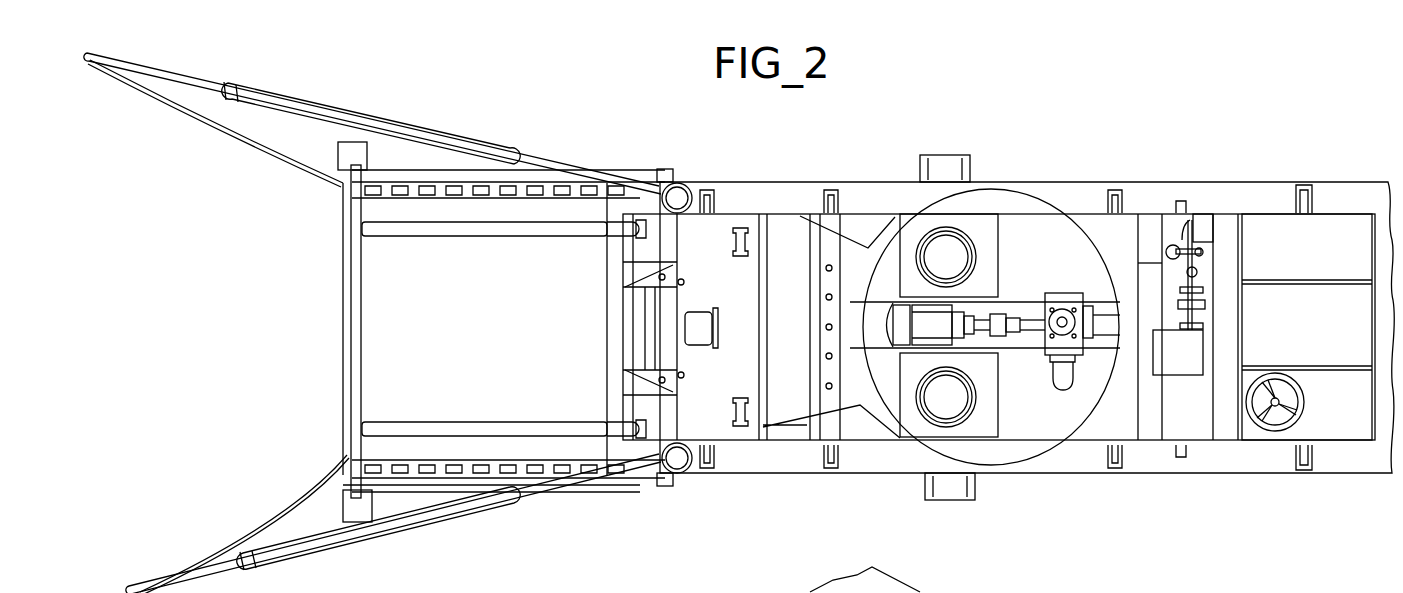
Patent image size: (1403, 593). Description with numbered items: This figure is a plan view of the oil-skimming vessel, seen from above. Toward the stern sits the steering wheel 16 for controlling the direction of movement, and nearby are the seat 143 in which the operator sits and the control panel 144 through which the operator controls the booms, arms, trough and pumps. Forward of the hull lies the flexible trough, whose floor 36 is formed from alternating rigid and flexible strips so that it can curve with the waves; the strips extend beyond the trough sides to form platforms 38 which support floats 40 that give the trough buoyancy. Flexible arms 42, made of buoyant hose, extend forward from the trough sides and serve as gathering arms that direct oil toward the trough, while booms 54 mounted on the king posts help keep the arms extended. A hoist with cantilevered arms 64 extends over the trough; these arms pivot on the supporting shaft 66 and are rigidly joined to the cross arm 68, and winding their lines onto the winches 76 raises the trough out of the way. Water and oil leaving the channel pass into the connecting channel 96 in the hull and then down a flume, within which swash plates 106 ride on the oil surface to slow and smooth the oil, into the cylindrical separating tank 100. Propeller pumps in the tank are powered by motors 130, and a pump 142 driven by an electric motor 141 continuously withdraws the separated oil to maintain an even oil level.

The steering wheel 16 is at (1304, 400).
The trough floor 36 is at (493, 316).
The platforms 38 is at (418, 485).
The floats 40 is at (460, 472).
The flexible arms 42 is at (280, 152).
The booms 54 is at (392, 120).
The cantilevered arms 64 is at (398, 238).
The supporting shaft 66 is at (605, 330).
The cross arm 68 is at (362, 330).
The winches 76 is at (750, 250).
The connecting channel 96 is at (802, 356).
The separating tank 100 is at (1103, 387).
The swash plates 106 is at (916, 591).
The motors 130 is at (930, 252).
The electric motor 141 is at (897, 350).
The pump 142 is at (1060, 293).
The seat 143 is at (702, 312).
The control panel 144 is at (680, 282).